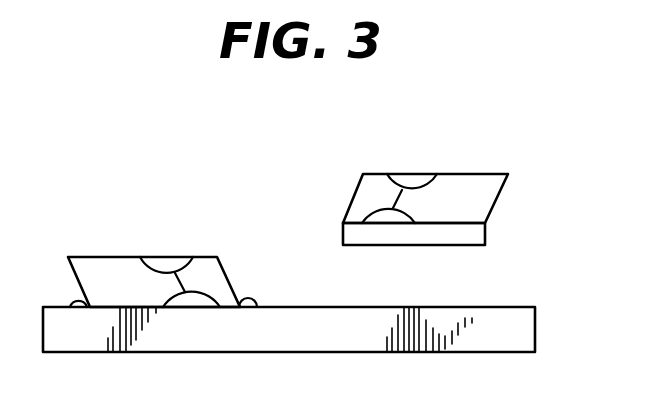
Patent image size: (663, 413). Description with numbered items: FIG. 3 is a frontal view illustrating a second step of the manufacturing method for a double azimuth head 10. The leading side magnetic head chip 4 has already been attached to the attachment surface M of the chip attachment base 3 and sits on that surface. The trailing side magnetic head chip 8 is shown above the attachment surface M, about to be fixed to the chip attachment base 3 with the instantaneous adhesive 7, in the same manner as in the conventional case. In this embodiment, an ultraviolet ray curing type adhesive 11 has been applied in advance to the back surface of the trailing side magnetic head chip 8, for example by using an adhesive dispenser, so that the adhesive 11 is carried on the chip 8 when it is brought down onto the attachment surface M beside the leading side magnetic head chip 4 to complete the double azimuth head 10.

The chip attachment base 3 is at (500, 322).
The leading side magnetic head chip 4 is at (102, 277).
The instantaneous adhesive 7 is at (249, 299).
The attachment surface M is at (295, 306).
The trailing side magnetic head chip 8 is at (458, 195).
The double azimuth head 10 is at (553, 190).
The ultraviolet ray curing type adhesive 11 is at (375, 233).